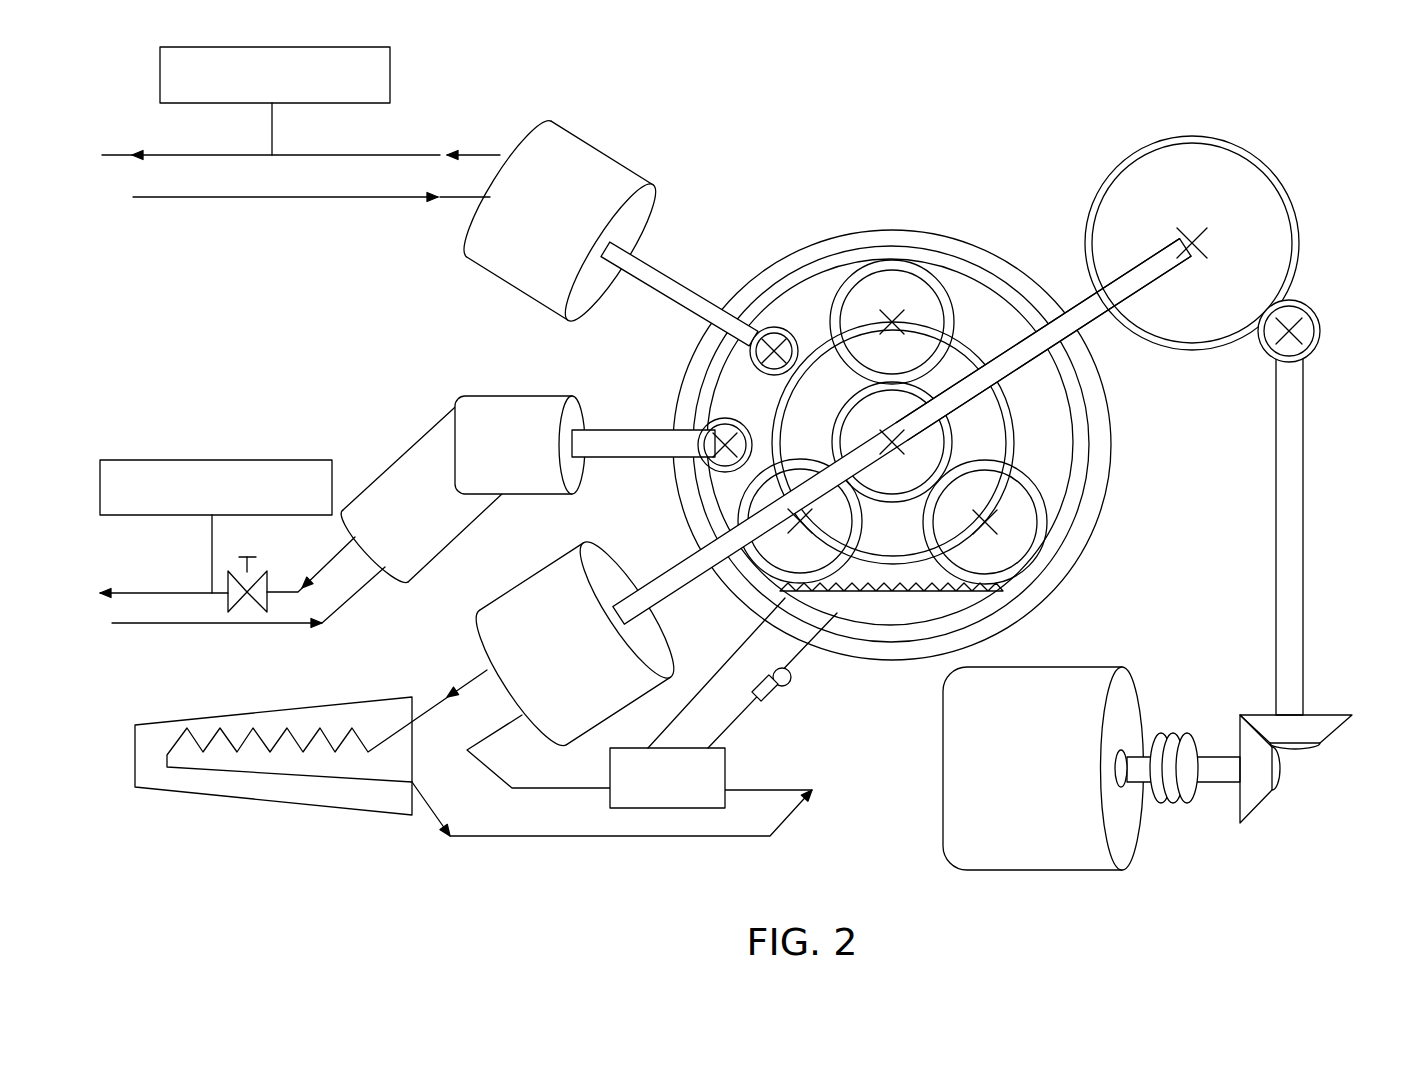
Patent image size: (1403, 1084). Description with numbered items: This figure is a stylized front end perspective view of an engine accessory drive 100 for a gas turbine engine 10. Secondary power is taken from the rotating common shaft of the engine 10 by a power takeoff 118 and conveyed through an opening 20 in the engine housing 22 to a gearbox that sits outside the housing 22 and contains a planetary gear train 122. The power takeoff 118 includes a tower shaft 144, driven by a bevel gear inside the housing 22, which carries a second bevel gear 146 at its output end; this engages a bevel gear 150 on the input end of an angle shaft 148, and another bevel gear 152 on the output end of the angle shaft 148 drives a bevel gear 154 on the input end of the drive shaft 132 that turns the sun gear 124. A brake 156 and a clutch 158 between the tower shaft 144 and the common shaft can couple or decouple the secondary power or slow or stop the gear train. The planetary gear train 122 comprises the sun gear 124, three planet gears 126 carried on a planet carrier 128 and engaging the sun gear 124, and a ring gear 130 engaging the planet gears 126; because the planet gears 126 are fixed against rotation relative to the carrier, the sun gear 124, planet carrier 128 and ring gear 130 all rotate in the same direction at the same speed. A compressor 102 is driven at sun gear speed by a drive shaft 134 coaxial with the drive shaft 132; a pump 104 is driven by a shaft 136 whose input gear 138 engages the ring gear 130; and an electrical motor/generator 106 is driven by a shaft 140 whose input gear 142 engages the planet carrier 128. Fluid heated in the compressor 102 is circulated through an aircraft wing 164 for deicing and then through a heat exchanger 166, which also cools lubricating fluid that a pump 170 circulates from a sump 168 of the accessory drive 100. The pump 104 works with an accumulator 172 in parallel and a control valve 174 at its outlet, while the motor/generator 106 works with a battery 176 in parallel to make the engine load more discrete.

The gas turbine engine 10 is at (1147, 746).
The opening 20 is at (1142, 722).
The housing 22 is at (1087, 667).
The engine accessory drive 100 is at (836, 233).
The compressor 102 is at (527, 598).
The pump 104 is at (512, 415).
The electrical motor/generator 106 is at (604, 157).
The power takeoff 118 is at (1320, 190).
The planetary gear train 122 is at (931, 222).
The sun gear 124 is at (954, 442).
The planet gears 126 is at (934, 280).
The planet carrier 128 is at (998, 382).
The ring gear 130 is at (1072, 512).
The drive shaft 132 is at (1083, 308).
The drive shaft 134 is at (680, 582).
The shaft 136 is at (621, 430).
The gear 138 is at (711, 420).
The shaft 140 is at (682, 287).
The gear 142 is at (783, 326).
The tower shaft 144 is at (1215, 762).
The second bevel gear 146 is at (1258, 795).
The angle shaft 148 is at (1304, 561).
The bevel gear 150 is at (1315, 743).
The bevel gear 152 is at (1322, 331).
The bevel gear 154 is at (1299, 259).
The brake 156 is at (1164, 805).
The clutch 158 is at (1187, 806).
The aircraft wing 164 is at (268, 800).
The heat exchanger 166 is at (667, 778).
The sump 168 is at (878, 620).
The pump 170 is at (783, 688).
The accumulator 172 is at (216, 487).
The control valve 174 is at (268, 577).
The battery 176 is at (275, 75).